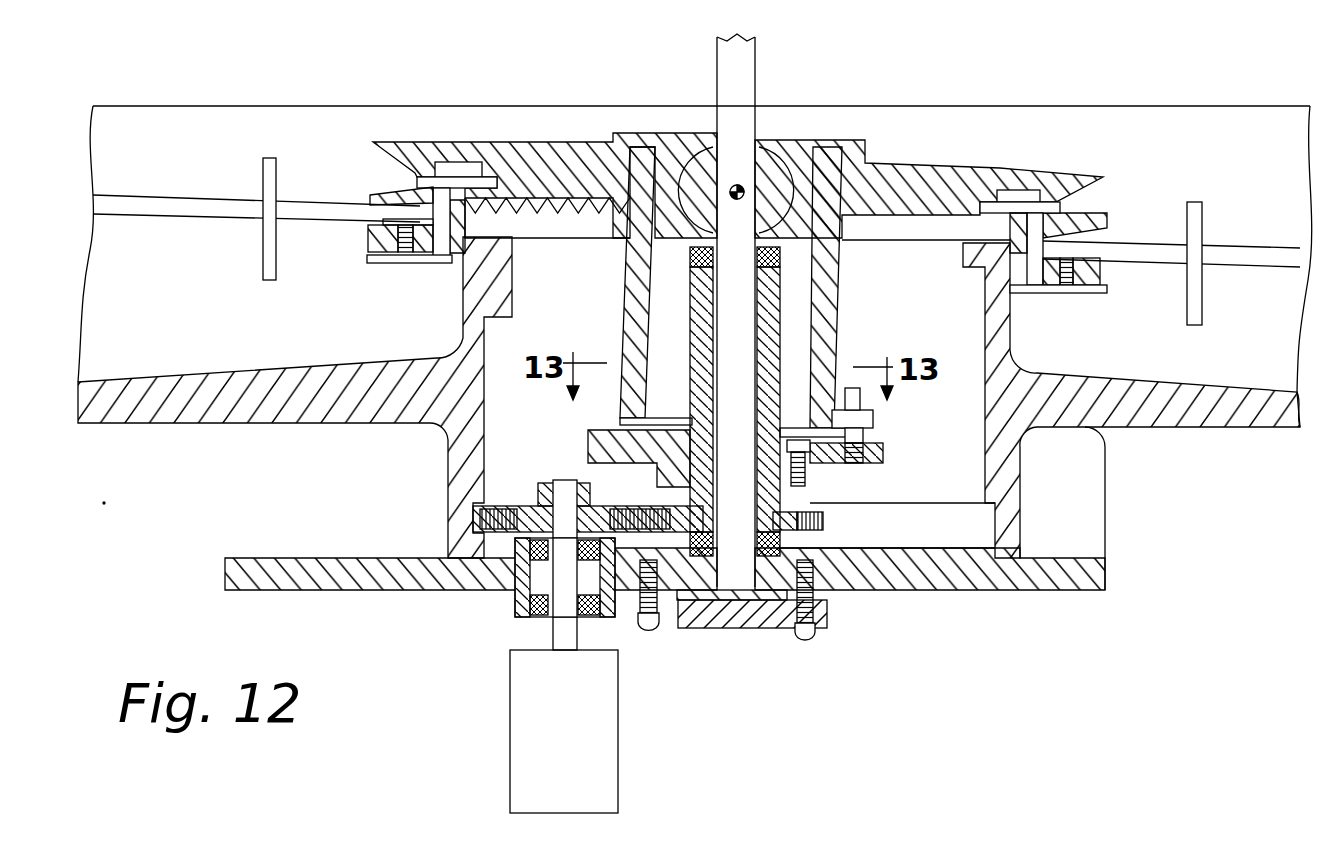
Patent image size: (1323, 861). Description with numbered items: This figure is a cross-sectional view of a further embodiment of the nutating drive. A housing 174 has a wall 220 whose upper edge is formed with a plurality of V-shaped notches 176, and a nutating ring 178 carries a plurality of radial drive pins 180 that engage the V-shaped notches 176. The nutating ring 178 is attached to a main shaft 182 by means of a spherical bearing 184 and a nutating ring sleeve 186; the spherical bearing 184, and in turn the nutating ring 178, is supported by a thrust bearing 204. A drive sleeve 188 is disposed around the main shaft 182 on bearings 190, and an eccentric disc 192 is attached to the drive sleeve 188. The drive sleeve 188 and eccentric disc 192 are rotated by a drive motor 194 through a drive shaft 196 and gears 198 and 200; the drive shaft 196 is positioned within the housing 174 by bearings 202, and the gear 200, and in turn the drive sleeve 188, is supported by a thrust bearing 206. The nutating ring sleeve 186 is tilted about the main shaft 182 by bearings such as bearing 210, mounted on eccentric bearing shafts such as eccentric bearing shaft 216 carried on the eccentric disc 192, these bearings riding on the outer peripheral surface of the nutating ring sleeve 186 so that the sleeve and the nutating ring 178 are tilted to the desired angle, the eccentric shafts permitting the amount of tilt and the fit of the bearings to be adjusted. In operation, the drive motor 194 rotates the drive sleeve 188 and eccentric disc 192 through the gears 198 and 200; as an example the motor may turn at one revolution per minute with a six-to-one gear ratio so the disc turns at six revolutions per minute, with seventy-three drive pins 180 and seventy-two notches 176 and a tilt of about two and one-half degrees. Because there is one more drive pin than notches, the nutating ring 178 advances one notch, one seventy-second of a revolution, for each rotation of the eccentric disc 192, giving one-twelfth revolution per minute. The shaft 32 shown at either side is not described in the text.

The shaft 32 is at (318, 198).
The housing 174 is at (1235, 428).
The V-shaped notches 176 is at (512, 207).
The nutating ring 178 is at (975, 166).
The drive pins 180 is at (1060, 208).
The main shaft 182 is at (748, 50).
The spherical bearing 184 is at (700, 157).
The nutating ring sleeve 186 is at (837, 279).
The drive sleeve 188 is at (688, 327).
The bearings 190 is at (705, 285).
The eccentric disc 192 is at (590, 443).
The drive motor 194 is at (528, 772).
The drive shaft 196 is at (560, 628).
The gear 198 is at (512, 508).
The gear 200 is at (825, 522).
The bearings 202 is at (520, 606).
The thrust bearing 204 is at (690, 255).
The thrust bearing 206 is at (782, 548).
The bearing 210 is at (868, 418).
The eccentric bearing shaft 216 is at (848, 388).
The wall 220 is at (455, 252).